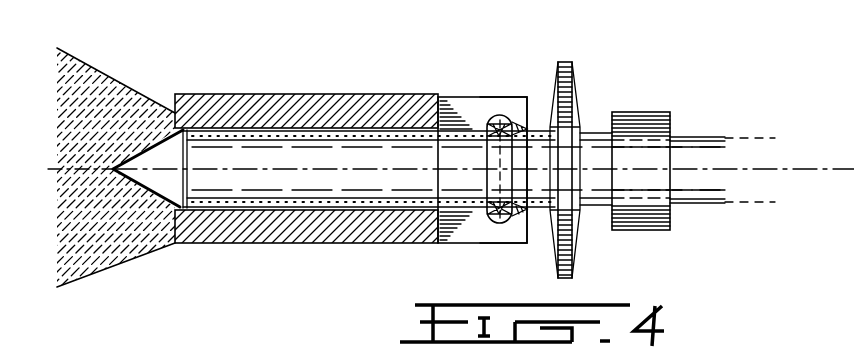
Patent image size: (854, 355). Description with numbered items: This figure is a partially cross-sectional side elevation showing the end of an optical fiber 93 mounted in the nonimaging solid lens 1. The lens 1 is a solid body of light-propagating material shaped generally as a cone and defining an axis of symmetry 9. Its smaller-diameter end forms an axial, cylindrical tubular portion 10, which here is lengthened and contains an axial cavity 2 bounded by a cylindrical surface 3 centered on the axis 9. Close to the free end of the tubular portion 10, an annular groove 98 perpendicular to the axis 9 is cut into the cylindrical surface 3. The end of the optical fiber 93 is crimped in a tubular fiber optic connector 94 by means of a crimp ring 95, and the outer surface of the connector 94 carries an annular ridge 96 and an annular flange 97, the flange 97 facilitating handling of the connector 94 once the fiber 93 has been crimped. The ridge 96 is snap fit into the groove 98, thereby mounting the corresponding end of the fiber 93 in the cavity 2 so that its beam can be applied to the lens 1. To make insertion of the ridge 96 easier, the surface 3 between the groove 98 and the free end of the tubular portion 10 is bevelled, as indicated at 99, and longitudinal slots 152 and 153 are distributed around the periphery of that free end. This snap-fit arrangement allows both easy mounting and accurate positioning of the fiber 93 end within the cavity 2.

The solid lens 1 is at (104, 64).
The axial cavity 2 is at (171, 200).
The cylindrical surface 3 is at (304, 206).
The axis of symmetry 9 is at (838, 172).
The tubular portion 10 is at (351, 110).
The optical fiber 93 is at (725, 138).
The tubular fiber optic connector 94 is at (451, 243).
The crimp ring 95 is at (645, 112).
The annular ridge 96 is at (507, 243).
The annular flange 97 is at (573, 64).
The annular groove 98 is at (490, 126).
The bevelled surface 99 is at (528, 122).
The longitudinal slot 152 is at (500, 113).
The longitudinal slot 153 is at (493, 226).